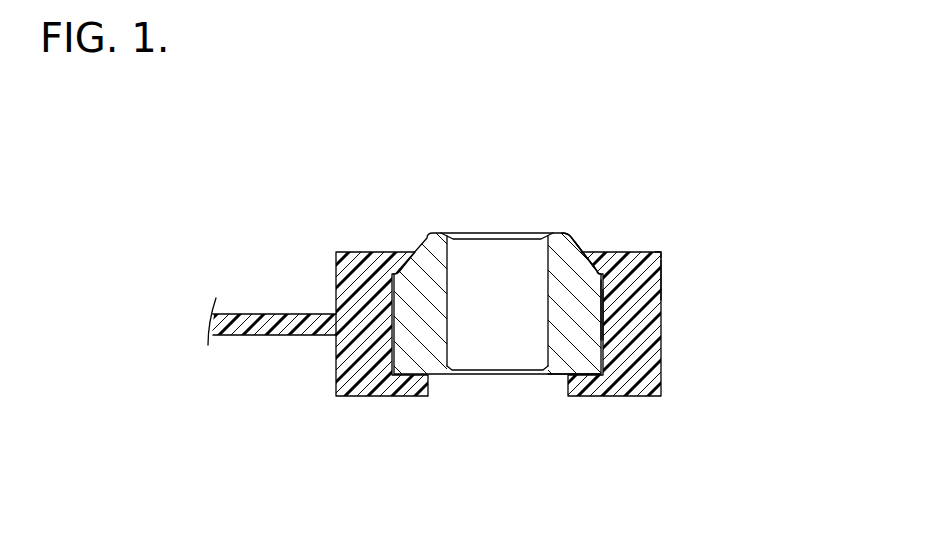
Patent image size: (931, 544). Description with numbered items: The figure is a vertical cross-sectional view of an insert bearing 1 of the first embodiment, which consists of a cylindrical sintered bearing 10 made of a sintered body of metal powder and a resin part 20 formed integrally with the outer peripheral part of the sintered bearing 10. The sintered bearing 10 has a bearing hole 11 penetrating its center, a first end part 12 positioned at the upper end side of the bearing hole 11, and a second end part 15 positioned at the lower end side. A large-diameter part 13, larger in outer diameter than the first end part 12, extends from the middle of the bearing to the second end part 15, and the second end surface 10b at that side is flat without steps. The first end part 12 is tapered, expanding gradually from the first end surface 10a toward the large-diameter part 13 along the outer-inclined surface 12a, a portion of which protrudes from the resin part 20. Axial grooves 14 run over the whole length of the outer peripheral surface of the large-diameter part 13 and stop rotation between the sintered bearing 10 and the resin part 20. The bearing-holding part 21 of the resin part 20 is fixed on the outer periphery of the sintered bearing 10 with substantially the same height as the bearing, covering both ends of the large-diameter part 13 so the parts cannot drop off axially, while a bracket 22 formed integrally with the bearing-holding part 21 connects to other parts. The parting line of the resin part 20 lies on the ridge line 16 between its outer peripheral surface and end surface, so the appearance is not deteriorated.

The insert bearing 1 is at (394, 190).
The sintered bearing 10 is at (457, 389).
The first end surface 10a is at (497, 233).
The second end surface 10b is at (488, 377).
The bearing hole 11 is at (452, 238).
The first end part 12 is at (565, 233).
The outer-inclined surface 12a is at (577, 245).
The large-diameter part 13 is at (597, 294).
The grooves 14 is at (605, 312).
The second end part 15 is at (558, 377).
The ridge line 16 is at (658, 252).
The resin part 20 is at (318, 364).
The bearing-holding part 21 is at (662, 270).
The bracket 22 is at (262, 313).